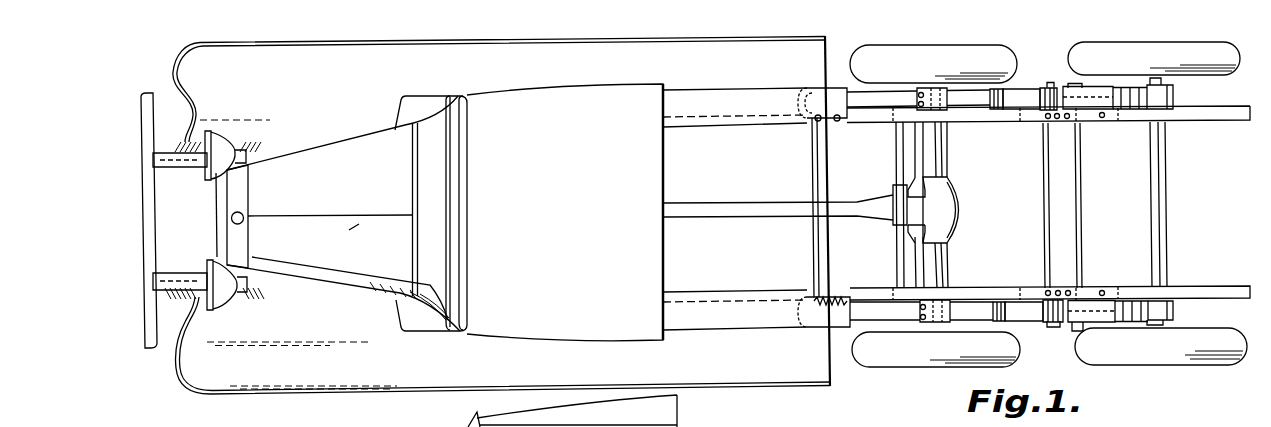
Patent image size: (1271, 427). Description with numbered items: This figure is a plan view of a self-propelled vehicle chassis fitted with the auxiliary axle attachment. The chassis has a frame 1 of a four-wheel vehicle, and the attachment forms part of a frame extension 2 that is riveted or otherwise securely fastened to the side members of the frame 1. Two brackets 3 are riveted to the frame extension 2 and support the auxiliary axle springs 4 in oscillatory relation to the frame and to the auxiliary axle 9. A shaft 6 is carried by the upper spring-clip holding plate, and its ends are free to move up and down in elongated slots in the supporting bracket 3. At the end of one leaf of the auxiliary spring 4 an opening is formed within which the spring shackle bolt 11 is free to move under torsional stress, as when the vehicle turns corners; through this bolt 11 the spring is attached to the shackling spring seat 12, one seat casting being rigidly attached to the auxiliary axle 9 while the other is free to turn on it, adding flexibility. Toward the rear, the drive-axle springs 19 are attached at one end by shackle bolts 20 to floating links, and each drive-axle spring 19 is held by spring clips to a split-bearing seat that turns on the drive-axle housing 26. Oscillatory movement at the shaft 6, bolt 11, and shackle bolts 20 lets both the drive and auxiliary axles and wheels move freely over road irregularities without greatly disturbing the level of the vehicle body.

The frame 1 is at (871, 131).
The frame extension 2 is at (1202, 117).
The bracket 3 is at (1093, 99).
The auxiliary axle spring 4 is at (1128, 94).
The shaft 6 is at (1073, 84).
The auxiliary axle 9 is at (1160, 205).
The spring shackle bolt 11 is at (1027, 89).
The shackling spring seat 12 is at (1176, 81).
The drive-axle spring 19 is at (871, 96).
The shackle bolt 20 is at (1047, 330).
The drive-axle housing 26 is at (933, 273).